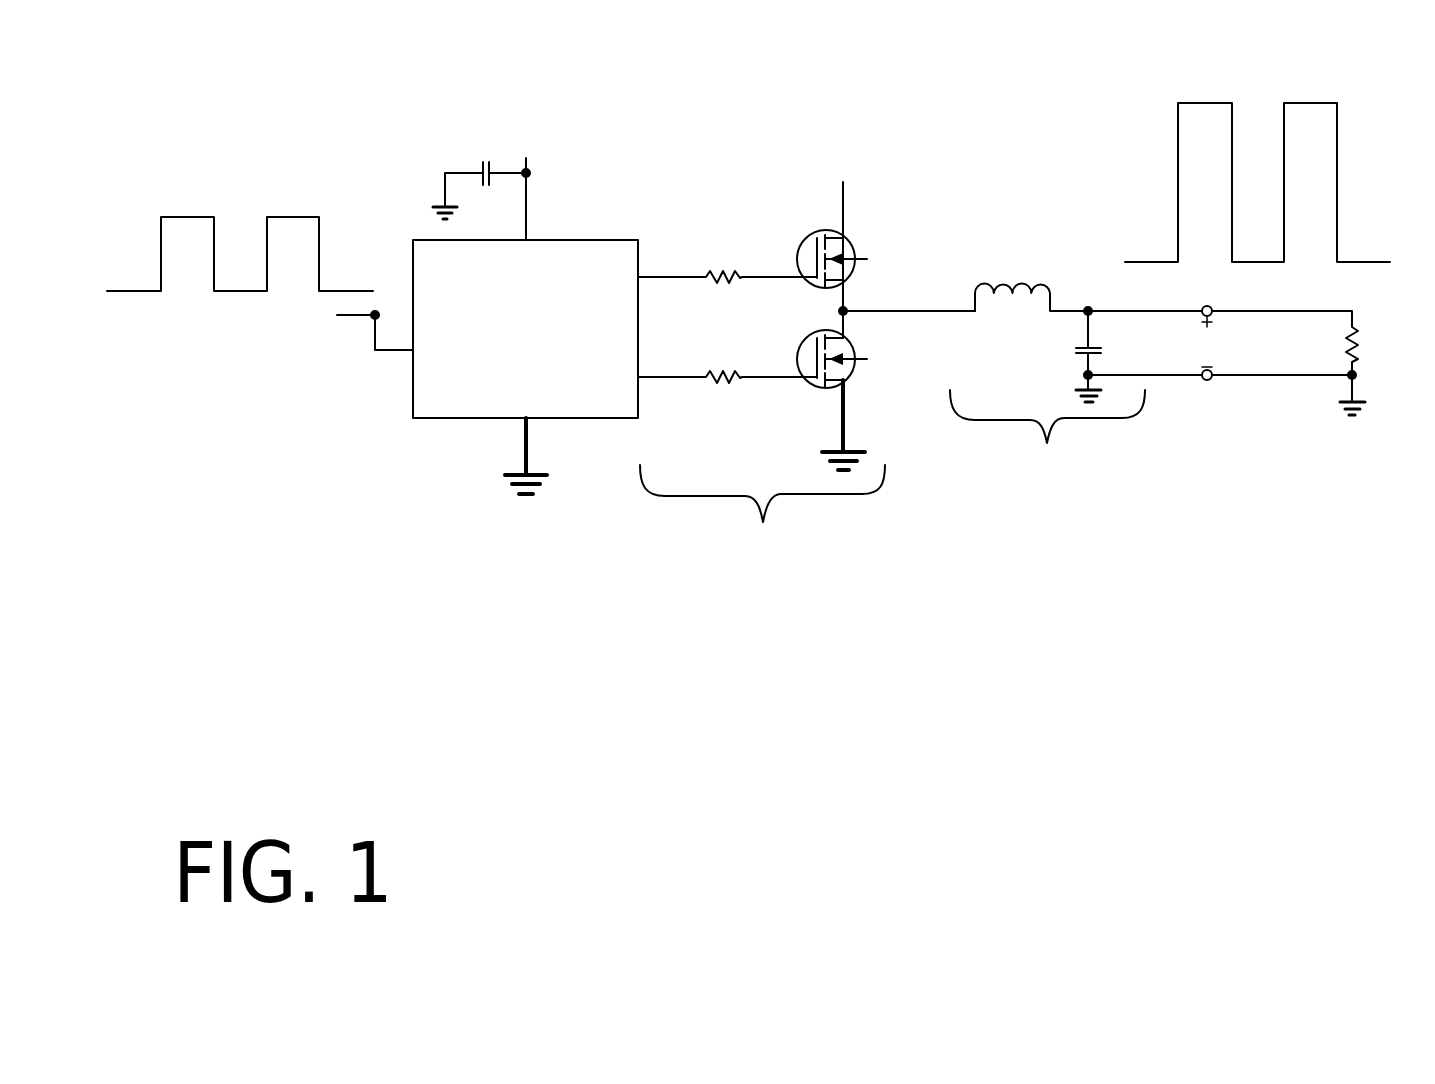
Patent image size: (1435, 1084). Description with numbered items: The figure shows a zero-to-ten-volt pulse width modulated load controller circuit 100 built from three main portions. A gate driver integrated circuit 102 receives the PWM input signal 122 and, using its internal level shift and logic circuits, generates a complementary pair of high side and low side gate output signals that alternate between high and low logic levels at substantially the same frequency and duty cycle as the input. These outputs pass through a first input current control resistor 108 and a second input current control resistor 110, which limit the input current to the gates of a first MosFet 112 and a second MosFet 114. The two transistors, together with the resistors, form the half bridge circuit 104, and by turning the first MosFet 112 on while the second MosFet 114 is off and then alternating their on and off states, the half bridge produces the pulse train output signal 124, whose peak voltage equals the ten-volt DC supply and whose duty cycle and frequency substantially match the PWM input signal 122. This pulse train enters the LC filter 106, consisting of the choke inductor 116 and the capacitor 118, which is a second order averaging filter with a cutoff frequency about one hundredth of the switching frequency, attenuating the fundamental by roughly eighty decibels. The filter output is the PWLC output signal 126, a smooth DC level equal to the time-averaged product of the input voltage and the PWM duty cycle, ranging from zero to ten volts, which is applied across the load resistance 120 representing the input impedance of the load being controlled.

The pulse width modulated load controller circuit 100 is at (587, 620).
The gate driver integrated circuit 102 is at (560, 358).
The half bridge circuit 104 is at (783, 366).
The inductor capacitor filter 106 is at (788, 303).
The input current control resistor 108 is at (727, 263).
The input current control resistor 110 is at (727, 364).
The MosFet 112 is at (852, 235).
The MosFet 114 is at (860, 383).
The inductor 116 is at (1031, 307).
The capacitor 118 is at (1065, 354).
The load resistance 120 is at (1252, 363).
The pulse width modulated input signal 122 is at (260, 283).
The pulse train output signal 124 is at (903, 302).
The pulse width LC output signal 126 is at (1220, 318).